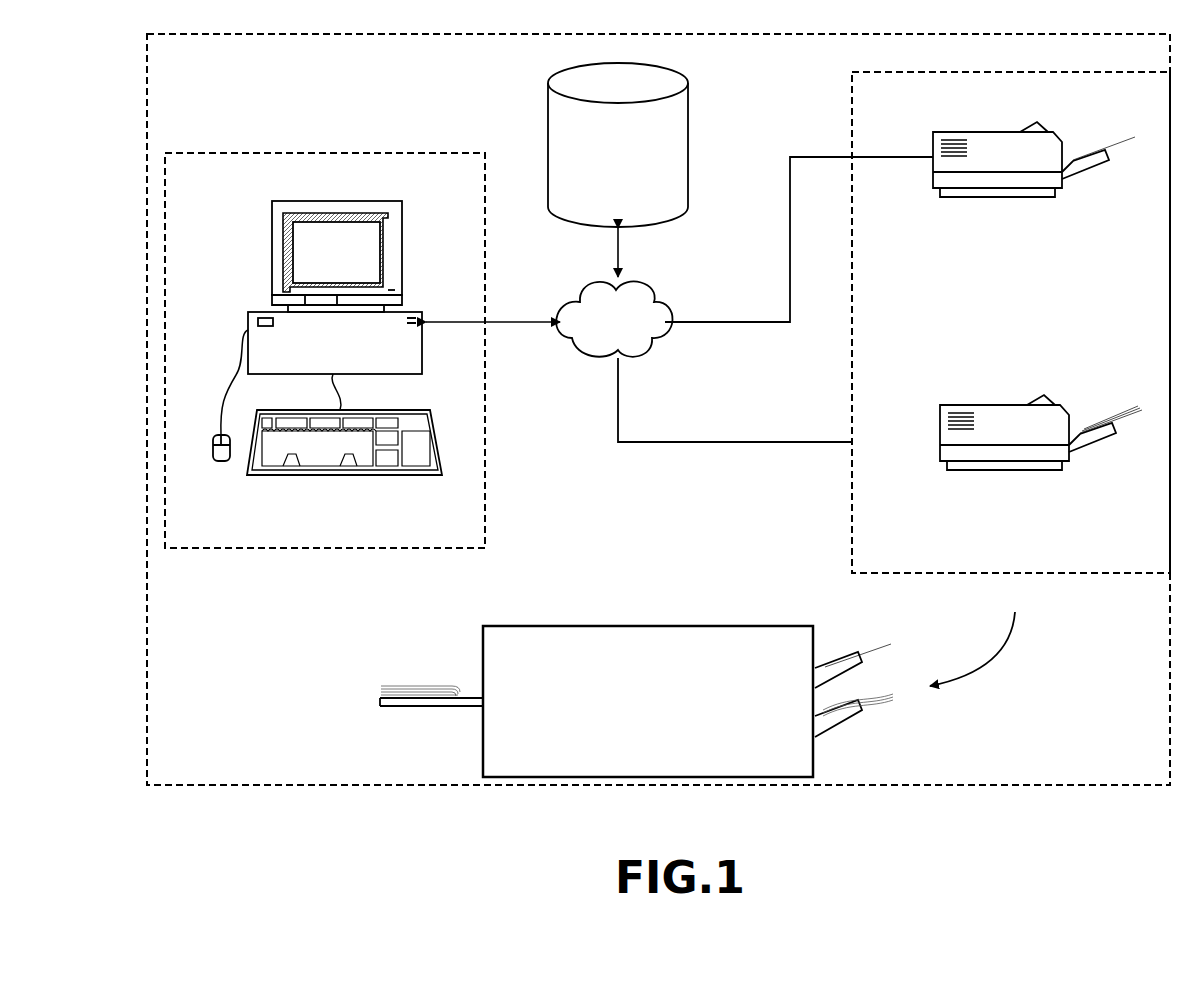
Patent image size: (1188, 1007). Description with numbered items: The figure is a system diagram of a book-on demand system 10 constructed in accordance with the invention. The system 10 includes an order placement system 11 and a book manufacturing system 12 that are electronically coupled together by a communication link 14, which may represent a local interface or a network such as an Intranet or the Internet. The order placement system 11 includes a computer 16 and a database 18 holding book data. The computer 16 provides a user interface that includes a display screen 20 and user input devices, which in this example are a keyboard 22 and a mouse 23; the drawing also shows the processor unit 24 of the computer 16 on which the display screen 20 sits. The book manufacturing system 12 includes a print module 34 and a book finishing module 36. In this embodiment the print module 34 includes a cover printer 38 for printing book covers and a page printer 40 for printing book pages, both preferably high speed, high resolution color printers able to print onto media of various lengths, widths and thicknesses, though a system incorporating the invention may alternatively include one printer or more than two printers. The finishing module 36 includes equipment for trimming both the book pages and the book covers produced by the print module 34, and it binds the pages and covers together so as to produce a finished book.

The book-on demand system 10 is at (147, 84).
The order placement system 11 is at (212, 153).
The book manufacturing system 12 is at (852, 545).
The communication link 14 is at (600, 329).
The computer 16 is at (252, 296).
The database 18 is at (688, 160).
The display screen 20 is at (322, 266).
The keyboard 22 is at (345, 476).
The mouse 23 is at (212, 461).
The processor unit 24 is at (388, 328).
The print module 34 is at (852, 128).
The book finishing module 36 is at (667, 702).
The cover printer 38 is at (993, 163).
The page printer 40 is at (1028, 438).